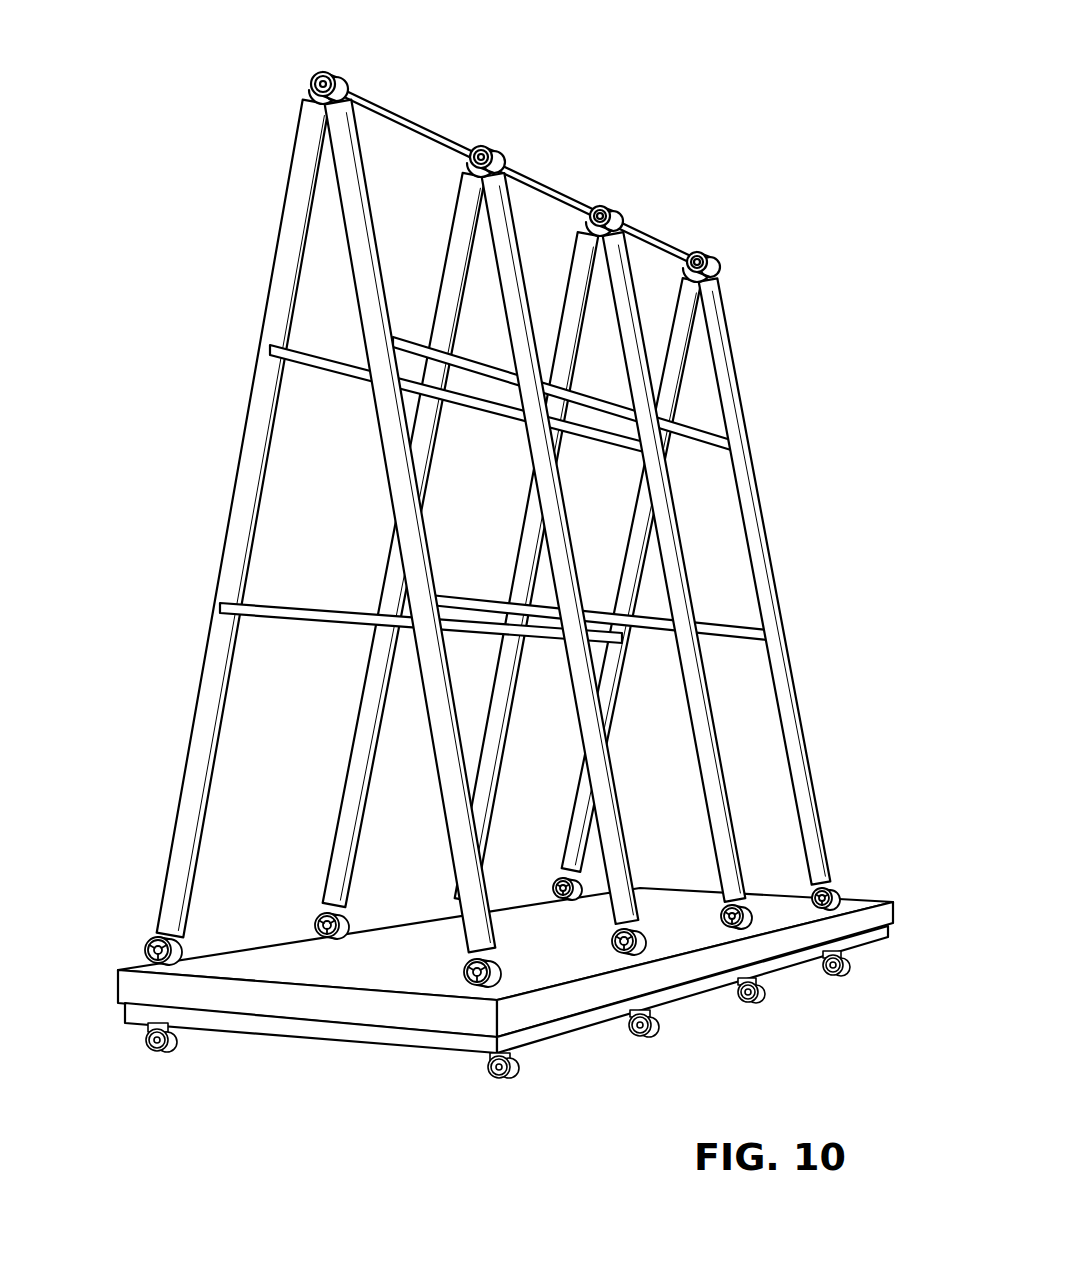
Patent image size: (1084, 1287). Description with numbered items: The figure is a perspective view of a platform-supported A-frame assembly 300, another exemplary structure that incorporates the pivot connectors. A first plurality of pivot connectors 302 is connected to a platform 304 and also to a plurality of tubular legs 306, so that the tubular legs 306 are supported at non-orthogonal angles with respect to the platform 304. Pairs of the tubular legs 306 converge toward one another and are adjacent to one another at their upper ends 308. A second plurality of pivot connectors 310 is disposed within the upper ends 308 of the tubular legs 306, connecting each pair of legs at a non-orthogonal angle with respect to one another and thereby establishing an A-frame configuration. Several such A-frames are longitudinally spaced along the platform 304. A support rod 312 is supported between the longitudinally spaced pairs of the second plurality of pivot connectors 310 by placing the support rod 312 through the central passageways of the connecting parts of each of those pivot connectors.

The platform-supported A-frame assembly 300 is at (483, 560).
The first plurality of pivot connectors 302 is at (145, 950).
The platform 304 is at (277, 1003).
The tubular legs 306 is at (355, 250).
The upper ends 308 is at (310, 108).
The second plurality of pivot connectors 310 is at (340, 76).
The support rod 312 is at (423, 117).